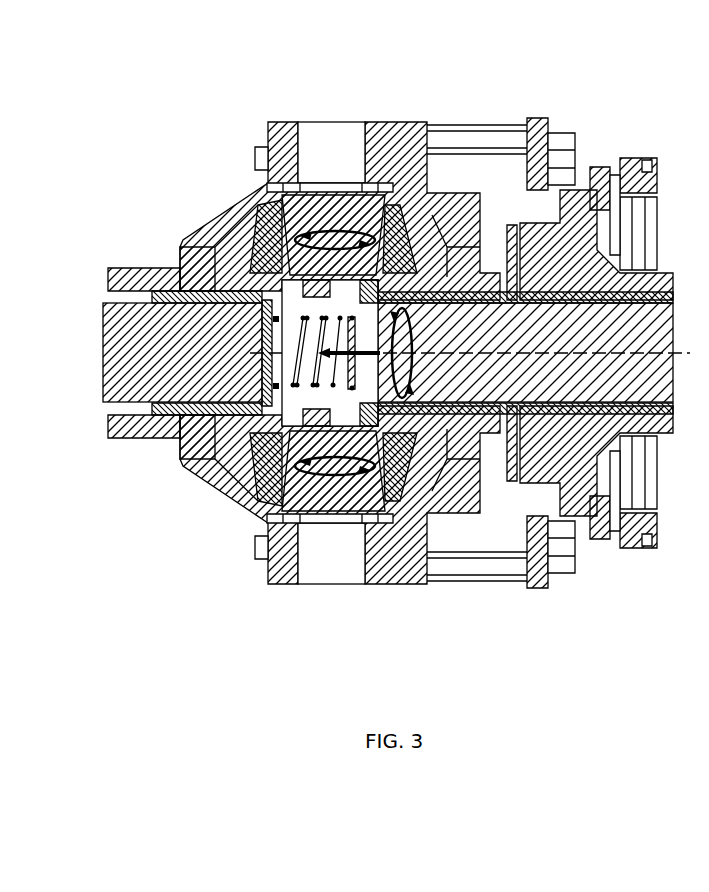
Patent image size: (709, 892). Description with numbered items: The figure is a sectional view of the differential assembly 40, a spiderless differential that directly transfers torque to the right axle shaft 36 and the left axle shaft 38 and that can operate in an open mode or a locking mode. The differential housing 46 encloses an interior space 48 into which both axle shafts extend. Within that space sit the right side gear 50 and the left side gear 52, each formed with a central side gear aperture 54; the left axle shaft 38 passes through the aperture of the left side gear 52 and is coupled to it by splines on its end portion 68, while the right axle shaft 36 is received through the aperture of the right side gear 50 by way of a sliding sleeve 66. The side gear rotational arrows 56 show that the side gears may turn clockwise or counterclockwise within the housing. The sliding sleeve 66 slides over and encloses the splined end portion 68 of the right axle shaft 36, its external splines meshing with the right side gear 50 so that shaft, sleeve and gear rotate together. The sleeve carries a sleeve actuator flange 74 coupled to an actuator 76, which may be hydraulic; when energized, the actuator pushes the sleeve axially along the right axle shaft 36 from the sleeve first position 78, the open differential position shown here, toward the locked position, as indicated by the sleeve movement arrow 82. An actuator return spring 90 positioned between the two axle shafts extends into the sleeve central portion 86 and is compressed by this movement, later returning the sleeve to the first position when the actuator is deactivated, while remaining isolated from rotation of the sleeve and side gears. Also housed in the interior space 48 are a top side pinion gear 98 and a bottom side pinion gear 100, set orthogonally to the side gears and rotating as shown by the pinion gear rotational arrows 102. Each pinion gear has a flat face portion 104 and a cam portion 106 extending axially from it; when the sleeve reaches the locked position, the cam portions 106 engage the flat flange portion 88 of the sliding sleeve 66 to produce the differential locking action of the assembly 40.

The differential assembly 40 is at (379, 343).
The differential housing 46 is at (193, 262).
The interior space 48 is at (238, 262).
The left side gear 52 is at (217, 452).
The side gear aperture 54 is at (173, 437).
The end portion 68 is at (247, 333).
The left axle shaft 38 is at (150, 352).
The right axle shaft 36 is at (652, 335).
The actuator return spring 90 is at (292, 368).
The sleeve central portion 86 is at (335, 205).
The flat face portion 104 is at (347, 265).
The sleeve first position 78 is at (363, 488).
The top side pinion gear 98 is at (269, 183).
The bottom side pinion gear 100 is at (407, 528).
The sleeve movement arrow 82 is at (252, 472).
The flat flange portion 88 is at (390, 240).
The right side gear 50 is at (425, 515).
The cam portion 106 is at (328, 240).
The pinion gear rotational arrows 102 is at (267, 583).
The side gear rotational arrows 56 is at (441, 260).
The sliding sleeve 66 is at (548, 165).
The sleeve actuator flange 74 is at (508, 507).
The actuator 76 is at (630, 540).